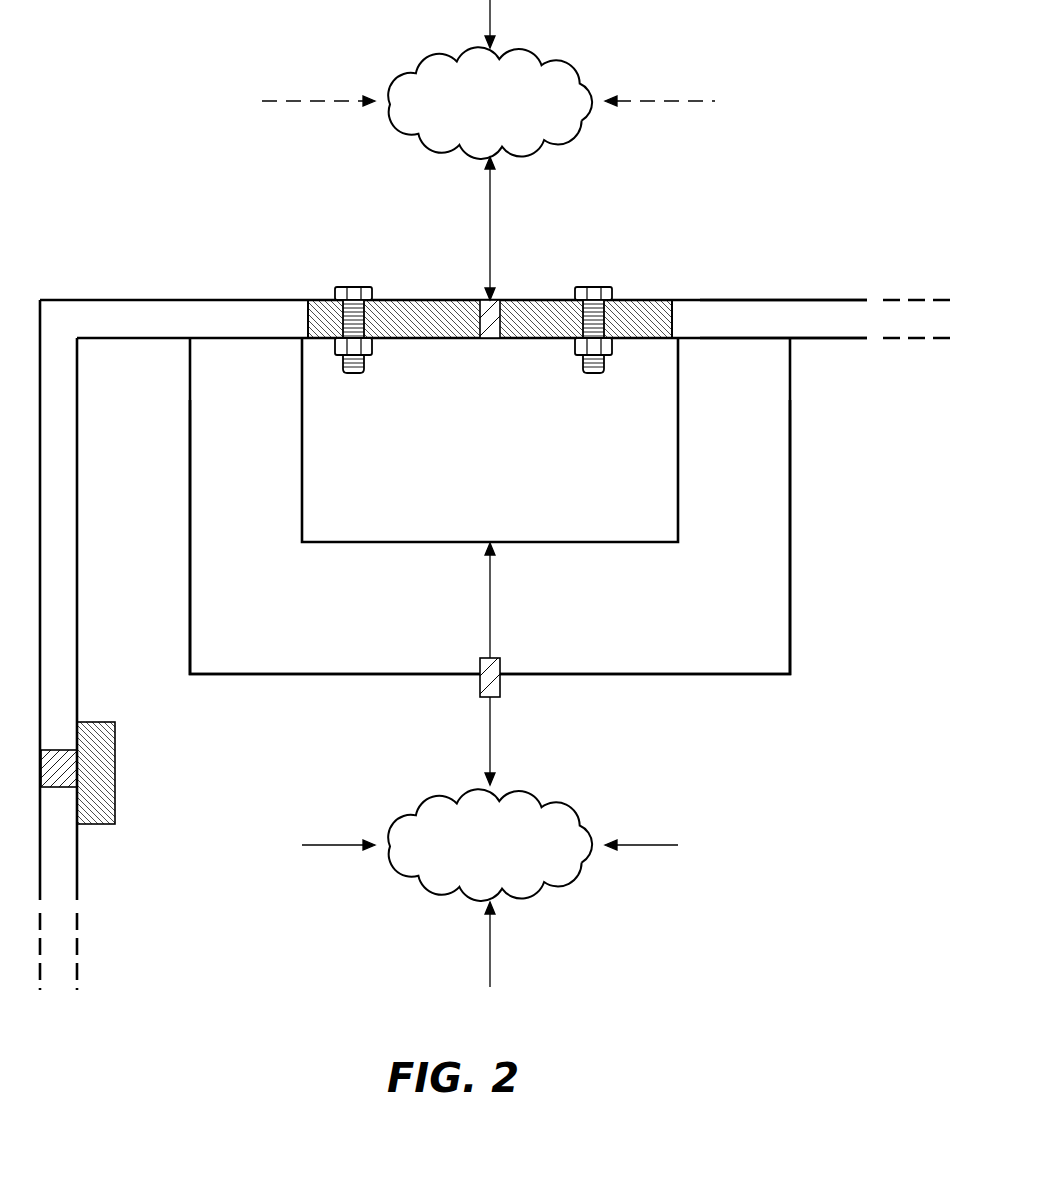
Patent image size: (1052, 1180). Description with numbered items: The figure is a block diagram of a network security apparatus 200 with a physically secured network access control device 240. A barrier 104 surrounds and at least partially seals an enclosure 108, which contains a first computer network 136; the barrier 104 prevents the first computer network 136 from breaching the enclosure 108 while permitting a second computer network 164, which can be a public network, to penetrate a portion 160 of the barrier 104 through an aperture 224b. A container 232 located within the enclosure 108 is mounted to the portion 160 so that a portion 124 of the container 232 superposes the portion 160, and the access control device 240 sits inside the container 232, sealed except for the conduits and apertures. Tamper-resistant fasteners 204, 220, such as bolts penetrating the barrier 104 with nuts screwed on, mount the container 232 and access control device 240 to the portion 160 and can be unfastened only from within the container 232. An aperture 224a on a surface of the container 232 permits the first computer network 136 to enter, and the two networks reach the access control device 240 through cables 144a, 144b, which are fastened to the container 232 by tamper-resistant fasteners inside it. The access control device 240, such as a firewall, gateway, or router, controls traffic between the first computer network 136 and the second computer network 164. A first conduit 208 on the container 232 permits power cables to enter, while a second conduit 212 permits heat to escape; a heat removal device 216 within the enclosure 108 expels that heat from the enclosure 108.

The network security apparatus 200 is at (146, 193).
The barrier 104 is at (137, 312).
The enclosure 108 is at (192, 901).
The portion of the container 124 is at (731, 333).
The portion of the barrier 160 is at (423, 302).
The tamper-resistant fastener 220 is at (352, 296).
The tamper-resistant fastener 204 is at (591, 292).
The aperture 224b is at (484, 297).
The cable 144b is at (492, 218).
The second computer network 164 is at (472, 114).
The access control device 240 is at (472, 449).
The container 232 is at (792, 500).
The first conduit 208 is at (262, 676).
The second conduit 212 is at (718, 676).
The aperture 224a is at (484, 686).
The cable 144a is at (492, 735).
The first computer network 136 is at (472, 856).
The heat removal device 216 is at (107, 789).